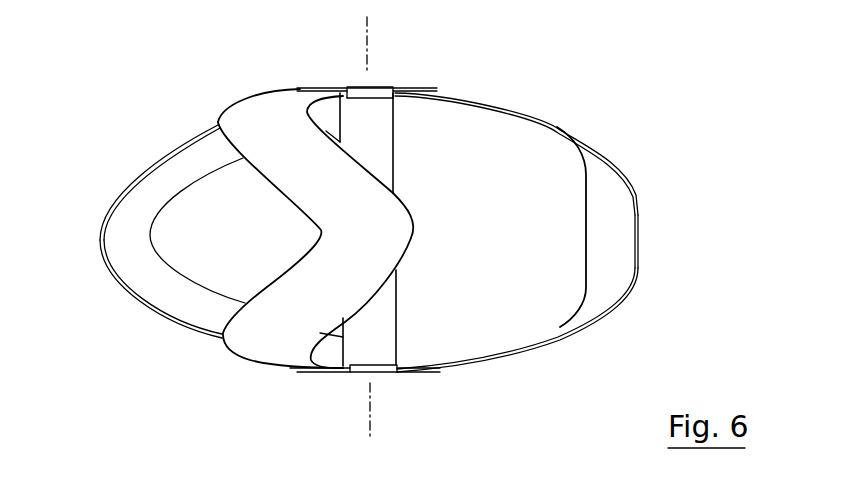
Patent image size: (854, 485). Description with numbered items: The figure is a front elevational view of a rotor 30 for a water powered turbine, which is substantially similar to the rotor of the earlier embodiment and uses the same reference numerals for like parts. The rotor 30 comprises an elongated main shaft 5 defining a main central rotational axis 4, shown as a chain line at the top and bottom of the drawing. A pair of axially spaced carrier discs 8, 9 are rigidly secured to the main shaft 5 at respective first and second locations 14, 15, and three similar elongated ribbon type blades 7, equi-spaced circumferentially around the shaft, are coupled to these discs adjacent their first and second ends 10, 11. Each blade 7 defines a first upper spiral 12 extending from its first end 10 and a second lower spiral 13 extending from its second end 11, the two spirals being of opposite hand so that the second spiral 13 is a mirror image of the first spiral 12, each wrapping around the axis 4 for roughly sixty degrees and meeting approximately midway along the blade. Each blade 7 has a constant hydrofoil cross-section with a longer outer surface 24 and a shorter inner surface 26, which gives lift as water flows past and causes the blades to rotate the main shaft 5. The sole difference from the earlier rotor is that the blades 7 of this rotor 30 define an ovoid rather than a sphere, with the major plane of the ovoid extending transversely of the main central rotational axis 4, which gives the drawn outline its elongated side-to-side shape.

The main central rotational axis 4 is at (366, 38).
The main shaft 5 is at (380, 158).
The blade 7 is at (147, 277).
The carrier disc 8 is at (377, 88).
The carrier disc 9 is at (358, 375).
The first end 10 is at (313, 88).
The second end 11 is at (312, 374).
The first upper spiral 12 is at (193, 153).
The second lower spiral 13 is at (182, 299).
The first location 14 is at (367, 98).
The second location 15 is at (373, 363).
The outer surface 24 is at (397, 225).
The inner surface 26 is at (128, 255).
The rotor 30 is at (120, 420).